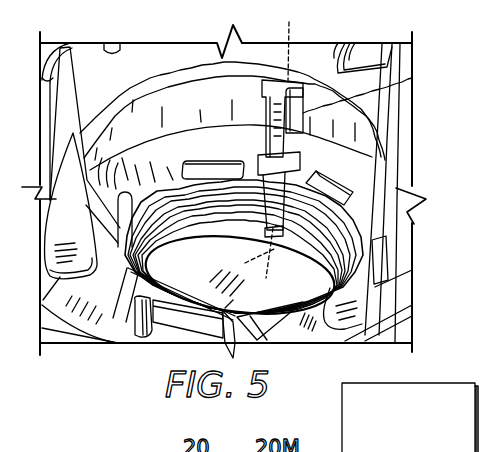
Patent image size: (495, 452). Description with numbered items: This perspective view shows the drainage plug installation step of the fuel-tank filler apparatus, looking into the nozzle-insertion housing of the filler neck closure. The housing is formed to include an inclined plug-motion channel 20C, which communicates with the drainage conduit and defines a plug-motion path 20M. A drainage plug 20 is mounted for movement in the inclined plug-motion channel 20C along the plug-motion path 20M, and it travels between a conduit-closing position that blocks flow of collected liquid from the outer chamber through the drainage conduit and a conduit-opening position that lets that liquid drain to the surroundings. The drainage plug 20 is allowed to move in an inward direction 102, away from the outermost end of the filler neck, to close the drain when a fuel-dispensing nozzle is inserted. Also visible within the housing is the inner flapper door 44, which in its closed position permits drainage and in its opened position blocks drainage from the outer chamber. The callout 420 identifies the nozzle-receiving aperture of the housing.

The drainage plug 20 is at (309, 104).
The inclined plug-motion channel 20C is at (284, 206).
The plug-motion path 20M is at (250, 257).
The inner flapper door 44 is at (172, 263).
The inward direction 102 is at (289, 165).
The nozzle-receiving aperture 420 is at (317, 255).